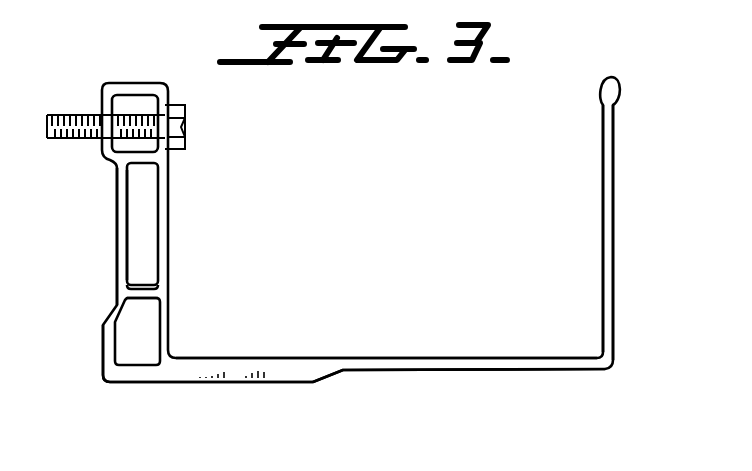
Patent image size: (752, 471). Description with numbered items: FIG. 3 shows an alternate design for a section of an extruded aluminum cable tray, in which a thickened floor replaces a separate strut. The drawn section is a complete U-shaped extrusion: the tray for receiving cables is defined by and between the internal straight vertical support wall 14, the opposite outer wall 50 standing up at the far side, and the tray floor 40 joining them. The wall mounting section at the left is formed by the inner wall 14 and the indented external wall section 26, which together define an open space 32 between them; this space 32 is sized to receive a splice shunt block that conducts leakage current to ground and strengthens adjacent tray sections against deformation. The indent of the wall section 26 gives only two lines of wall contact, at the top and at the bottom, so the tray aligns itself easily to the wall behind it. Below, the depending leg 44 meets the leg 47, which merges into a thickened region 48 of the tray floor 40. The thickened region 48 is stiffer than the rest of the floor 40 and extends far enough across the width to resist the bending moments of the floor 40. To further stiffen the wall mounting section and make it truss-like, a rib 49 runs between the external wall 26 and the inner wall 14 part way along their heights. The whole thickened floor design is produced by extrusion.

The internal straight vertical support wall 14 is at (170, 240).
The indented wall section 26 is at (120, 240).
The open space 32 is at (138, 207).
The tray floor 40 is at (427, 330).
The depending leg 44 is at (103, 348).
The leg 47 is at (140, 385).
The thickened region 48 is at (228, 383).
The rib 49 is at (145, 282).
The outer wall 50 is at (618, 242).